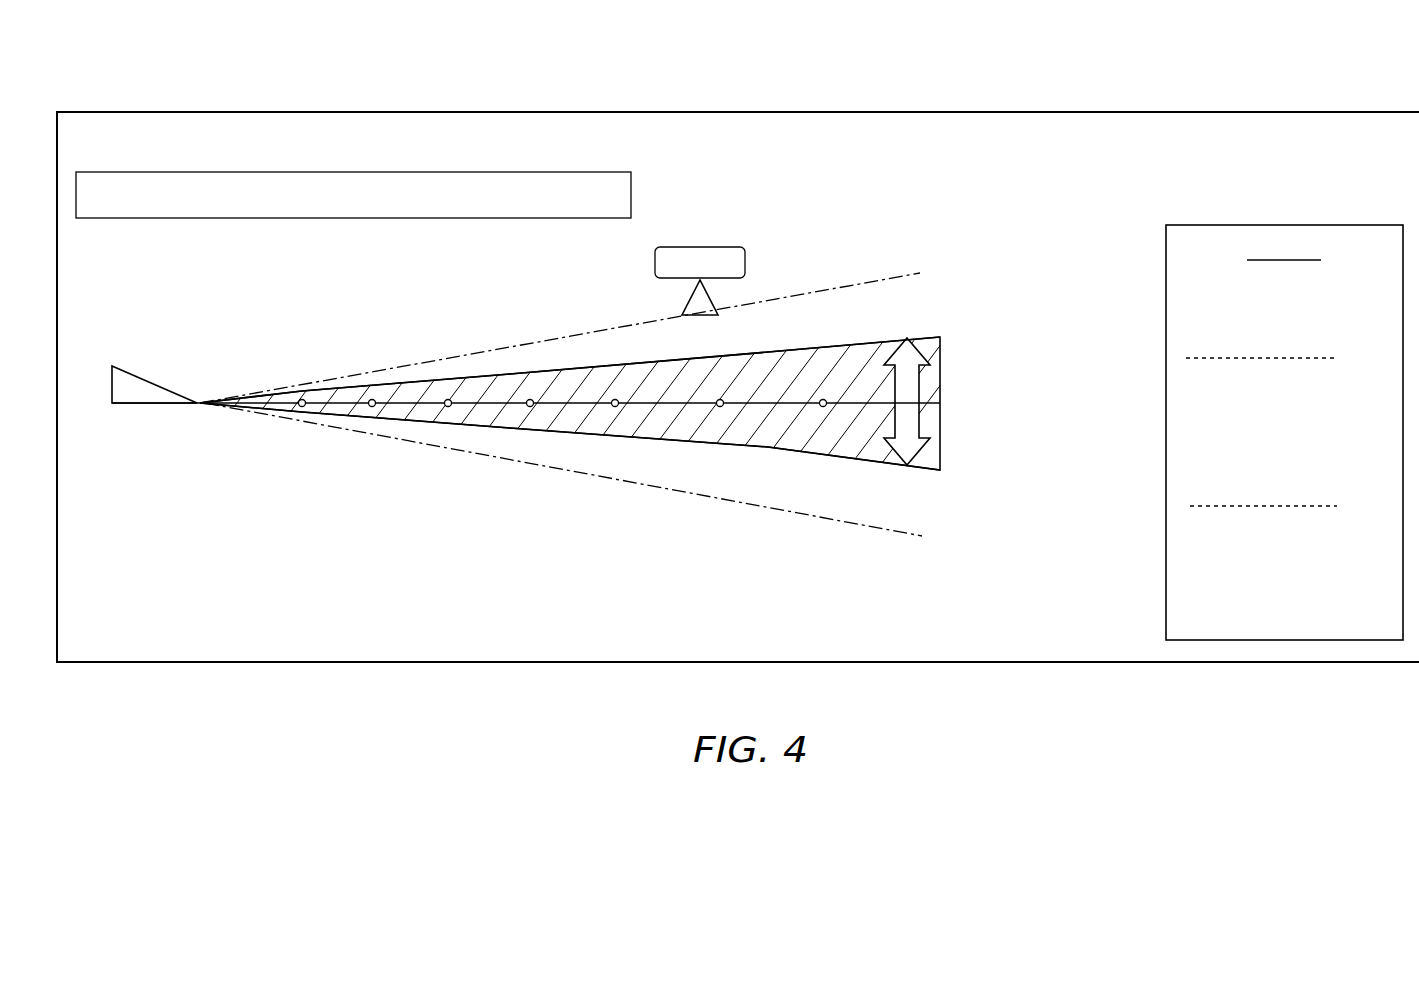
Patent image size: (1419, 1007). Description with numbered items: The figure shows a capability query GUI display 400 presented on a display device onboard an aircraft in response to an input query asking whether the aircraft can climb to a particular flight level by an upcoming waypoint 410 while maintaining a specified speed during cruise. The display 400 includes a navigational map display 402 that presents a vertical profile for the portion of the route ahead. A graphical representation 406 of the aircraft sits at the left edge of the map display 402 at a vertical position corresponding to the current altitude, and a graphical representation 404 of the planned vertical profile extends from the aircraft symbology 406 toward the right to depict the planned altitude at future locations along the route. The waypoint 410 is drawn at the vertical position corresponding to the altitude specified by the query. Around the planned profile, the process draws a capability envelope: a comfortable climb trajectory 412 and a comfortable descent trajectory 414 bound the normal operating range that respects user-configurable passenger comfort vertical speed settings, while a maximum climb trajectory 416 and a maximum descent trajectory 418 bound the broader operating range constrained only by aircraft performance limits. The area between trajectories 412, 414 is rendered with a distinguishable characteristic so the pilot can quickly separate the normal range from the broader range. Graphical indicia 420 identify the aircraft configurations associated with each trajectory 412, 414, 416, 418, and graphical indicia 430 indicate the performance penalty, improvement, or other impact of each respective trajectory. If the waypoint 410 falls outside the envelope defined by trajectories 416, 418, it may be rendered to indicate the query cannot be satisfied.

The capability query GUI display 400 is at (164, 111).
The navigational map display 402 is at (743, 148).
The graphical representation of the vertical profile 404 is at (580, 405).
The graphical representation of the aircraft 406 is at (155, 405).
The upcoming waypoint 410 is at (683, 303).
The comfortable climb trajectory 412 is at (768, 350).
The comfortable descent trajectory 414 is at (703, 445).
The maximum climb trajectory 416 is at (767, 300).
The maximum descent trajectory 418 is at (815, 520).
The graphical indicia of aircraft configurations 420 is at (1004, 245).
The graphical indicia of performance impact 430 is at (1238, 215).